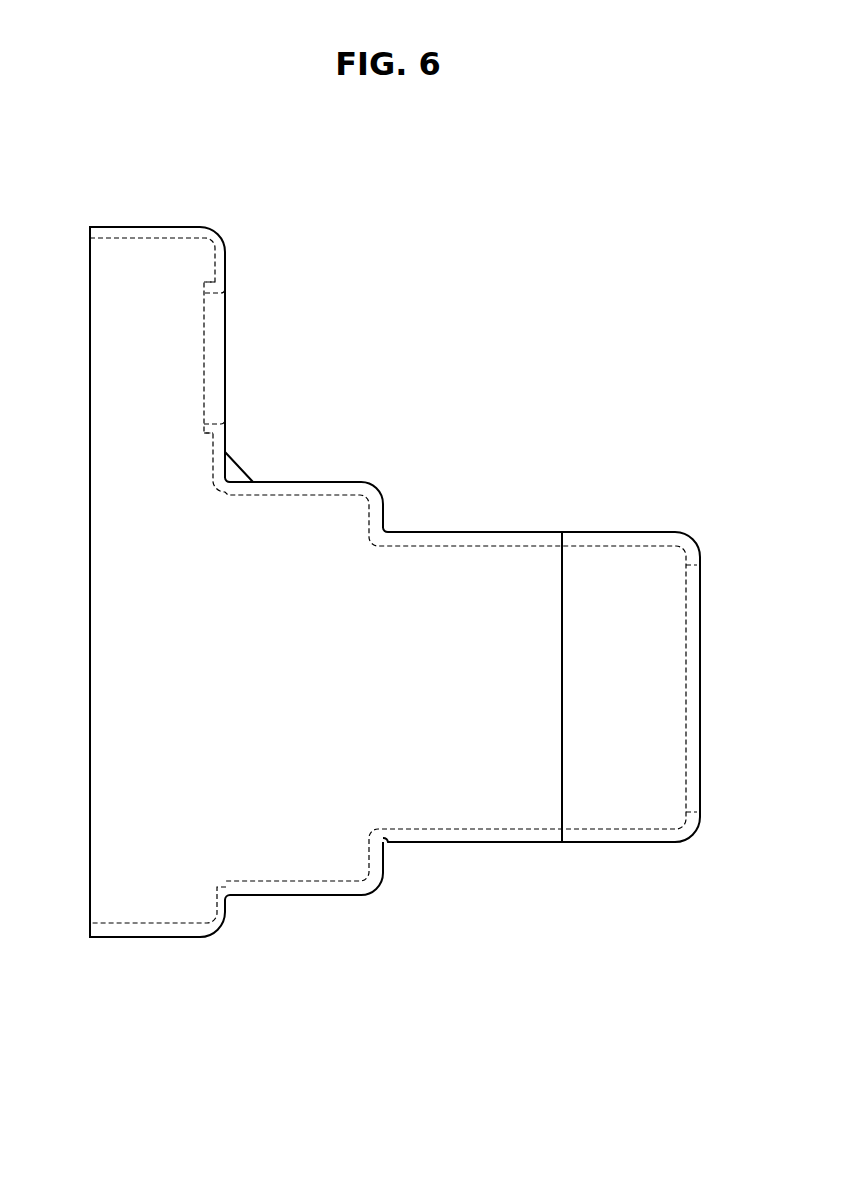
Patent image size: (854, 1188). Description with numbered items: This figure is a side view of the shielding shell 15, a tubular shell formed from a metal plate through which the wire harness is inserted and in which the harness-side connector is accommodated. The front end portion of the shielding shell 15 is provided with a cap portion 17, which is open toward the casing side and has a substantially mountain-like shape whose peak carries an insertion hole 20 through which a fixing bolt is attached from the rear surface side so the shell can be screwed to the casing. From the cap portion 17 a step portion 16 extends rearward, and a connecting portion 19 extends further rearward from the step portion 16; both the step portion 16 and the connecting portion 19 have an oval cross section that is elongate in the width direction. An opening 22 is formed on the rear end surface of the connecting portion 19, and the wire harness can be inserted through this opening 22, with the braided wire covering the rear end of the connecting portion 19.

The shielding shell 15 is at (100, 208).
The step portion 16 is at (293, 860).
The cap portion 17 is at (147, 897).
The connecting portion 19 is at (473, 563).
The insertion hole 20 is at (217, 313).
The opening 22 is at (697, 584).